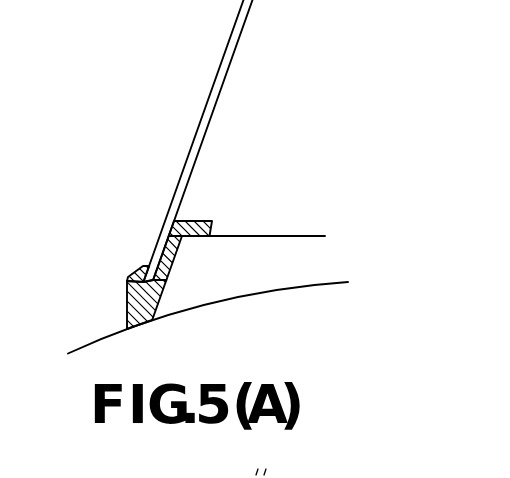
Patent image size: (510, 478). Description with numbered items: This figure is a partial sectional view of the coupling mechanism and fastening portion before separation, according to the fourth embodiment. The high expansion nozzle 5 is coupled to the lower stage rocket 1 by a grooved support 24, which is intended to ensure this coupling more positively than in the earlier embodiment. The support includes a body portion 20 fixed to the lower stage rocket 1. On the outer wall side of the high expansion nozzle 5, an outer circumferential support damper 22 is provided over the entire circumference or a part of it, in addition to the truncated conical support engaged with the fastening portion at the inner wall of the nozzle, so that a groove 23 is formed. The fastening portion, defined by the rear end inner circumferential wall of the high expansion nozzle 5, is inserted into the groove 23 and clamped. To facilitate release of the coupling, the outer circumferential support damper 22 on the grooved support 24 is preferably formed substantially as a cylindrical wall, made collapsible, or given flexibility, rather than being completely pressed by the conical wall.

The high expansion nozzle 5 is at (216, 80).
The body portion 20 is at (307, 236).
The grooved support 24 is at (194, 221).
The outer circumferential support damper 22 is at (134, 270).
The groove 23 is at (128, 291).
The lower stage rocket 1 is at (208, 318).